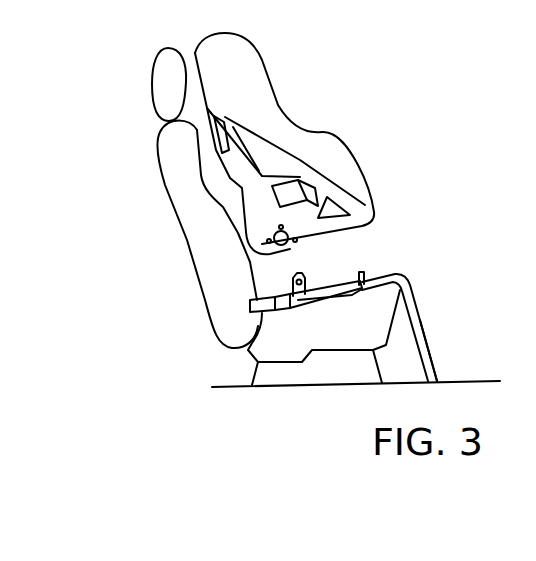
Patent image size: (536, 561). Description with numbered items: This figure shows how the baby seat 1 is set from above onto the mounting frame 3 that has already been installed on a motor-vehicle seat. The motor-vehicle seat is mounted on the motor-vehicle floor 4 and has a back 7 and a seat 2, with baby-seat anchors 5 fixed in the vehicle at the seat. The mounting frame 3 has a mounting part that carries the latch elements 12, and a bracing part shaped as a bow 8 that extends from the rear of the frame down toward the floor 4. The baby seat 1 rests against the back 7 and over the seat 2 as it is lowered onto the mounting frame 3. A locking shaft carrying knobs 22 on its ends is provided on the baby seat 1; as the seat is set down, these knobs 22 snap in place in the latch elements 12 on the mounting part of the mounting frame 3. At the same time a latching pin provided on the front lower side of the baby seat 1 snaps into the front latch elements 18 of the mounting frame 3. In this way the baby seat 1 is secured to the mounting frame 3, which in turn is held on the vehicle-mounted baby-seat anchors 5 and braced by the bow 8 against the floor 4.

The baby seat 1 is at (332, 165).
The seat 2 is at (328, 336).
The mounting frame 3 is at (410, 292).
The motor-vehicle floor 4 is at (237, 388).
The baby-seat anchors 5 is at (248, 310).
The back 7 is at (180, 152).
The bow 8 is at (430, 365).
The latch elements 12 is at (313, 278).
The front latch elements 18 is at (360, 283).
The knobs 22 is at (265, 240).